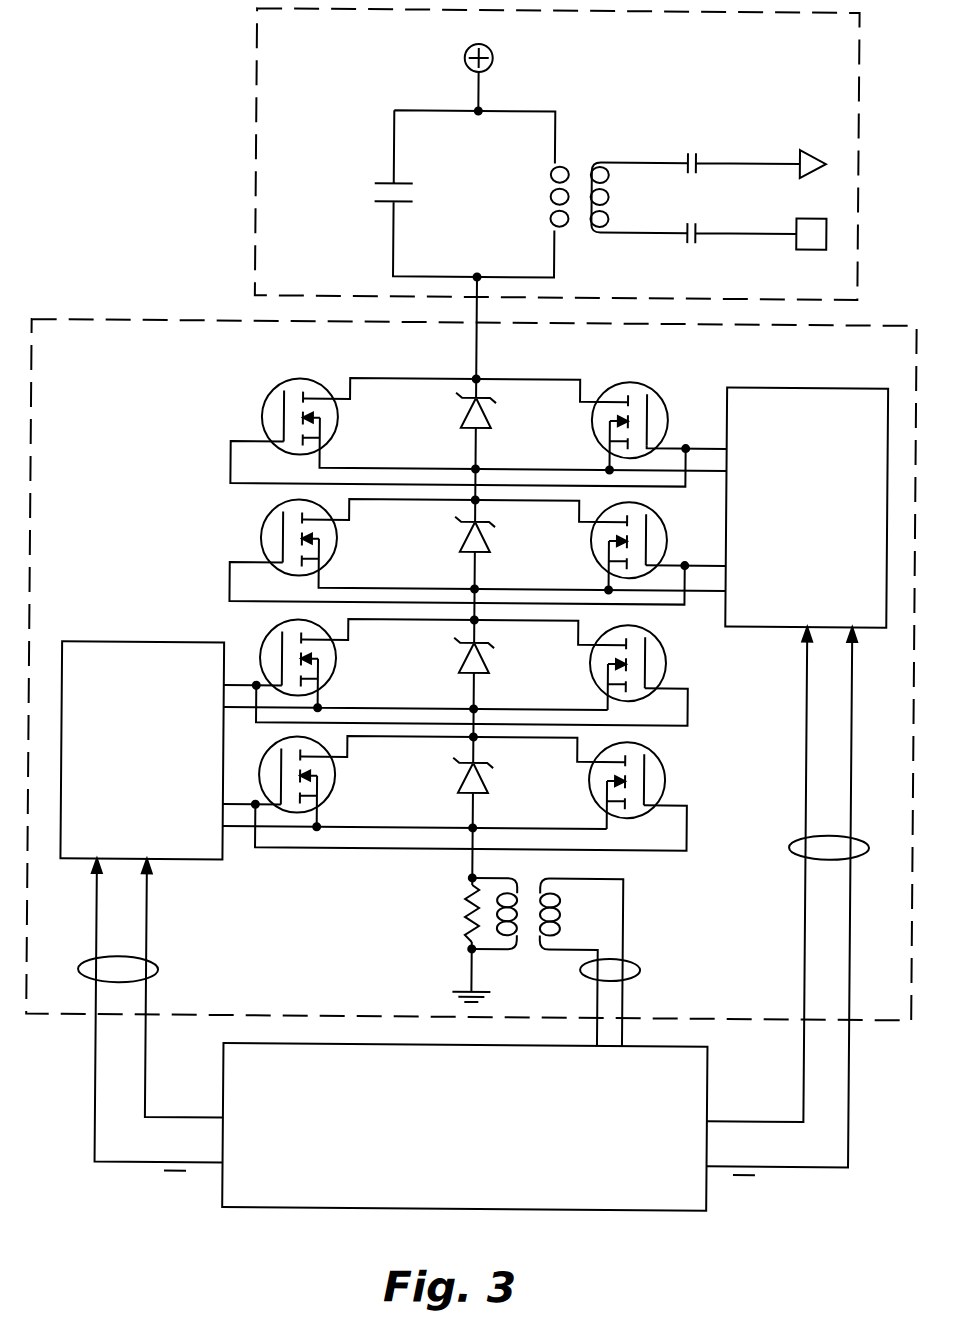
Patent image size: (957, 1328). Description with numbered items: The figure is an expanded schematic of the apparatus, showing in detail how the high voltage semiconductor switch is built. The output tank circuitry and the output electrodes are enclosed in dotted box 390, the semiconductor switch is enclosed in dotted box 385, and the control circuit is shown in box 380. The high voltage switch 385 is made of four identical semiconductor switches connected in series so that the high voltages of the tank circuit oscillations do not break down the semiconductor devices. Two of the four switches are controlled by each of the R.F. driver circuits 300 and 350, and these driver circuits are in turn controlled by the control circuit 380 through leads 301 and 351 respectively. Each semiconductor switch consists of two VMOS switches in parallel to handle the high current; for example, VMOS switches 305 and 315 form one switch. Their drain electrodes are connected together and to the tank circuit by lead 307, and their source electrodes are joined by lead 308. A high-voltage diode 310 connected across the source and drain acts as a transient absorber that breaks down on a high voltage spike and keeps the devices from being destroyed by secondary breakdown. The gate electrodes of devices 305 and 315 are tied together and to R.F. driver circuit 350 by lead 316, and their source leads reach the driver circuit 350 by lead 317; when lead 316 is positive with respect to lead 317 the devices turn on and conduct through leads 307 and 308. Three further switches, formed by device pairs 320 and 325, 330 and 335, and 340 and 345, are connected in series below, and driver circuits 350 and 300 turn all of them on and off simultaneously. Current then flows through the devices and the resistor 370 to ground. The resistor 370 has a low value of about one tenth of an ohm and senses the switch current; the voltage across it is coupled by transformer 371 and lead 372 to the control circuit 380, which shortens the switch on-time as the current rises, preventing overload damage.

The R.F. driver circuit 300 is at (138, 644).
The lead 301 is at (160, 970).
The VMOS switch 305 is at (272, 394).
The lead 307 is at (430, 381).
The lead 308 is at (383, 466).
The high-voltage diode 310 is at (488, 407).
The VMOS switch 315 is at (652, 392).
The lead 316 is at (684, 446).
The lead 317 is at (703, 474).
The VMOS switch 320 is at (263, 522).
The VMOS switch 325 is at (667, 540).
The VMOS switch 330 is at (336, 668).
The VMOS switch 335 is at (666, 670).
The VMOS switch 340 is at (336, 788).
The VMOS switch 345 is at (666, 790).
The R.F. driver circuit 350 is at (789, 386).
The lead 351 is at (791, 846).
The resistor 370 is at (471, 924).
The transformer 371 is at (545, 983).
The lead 372 is at (643, 970).
The control circuit 380 is at (589, 1209).
The high voltage switch 385 is at (100, 369).
The output tank circuitry 390 is at (752, 83).